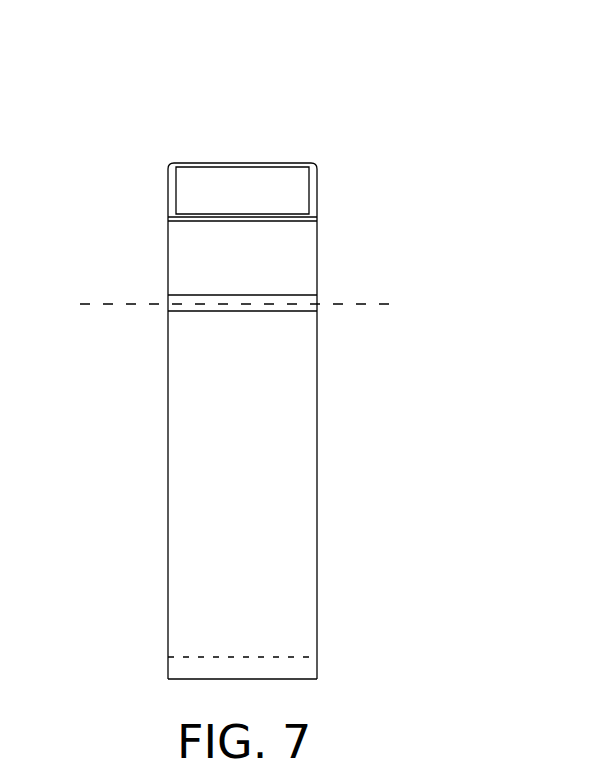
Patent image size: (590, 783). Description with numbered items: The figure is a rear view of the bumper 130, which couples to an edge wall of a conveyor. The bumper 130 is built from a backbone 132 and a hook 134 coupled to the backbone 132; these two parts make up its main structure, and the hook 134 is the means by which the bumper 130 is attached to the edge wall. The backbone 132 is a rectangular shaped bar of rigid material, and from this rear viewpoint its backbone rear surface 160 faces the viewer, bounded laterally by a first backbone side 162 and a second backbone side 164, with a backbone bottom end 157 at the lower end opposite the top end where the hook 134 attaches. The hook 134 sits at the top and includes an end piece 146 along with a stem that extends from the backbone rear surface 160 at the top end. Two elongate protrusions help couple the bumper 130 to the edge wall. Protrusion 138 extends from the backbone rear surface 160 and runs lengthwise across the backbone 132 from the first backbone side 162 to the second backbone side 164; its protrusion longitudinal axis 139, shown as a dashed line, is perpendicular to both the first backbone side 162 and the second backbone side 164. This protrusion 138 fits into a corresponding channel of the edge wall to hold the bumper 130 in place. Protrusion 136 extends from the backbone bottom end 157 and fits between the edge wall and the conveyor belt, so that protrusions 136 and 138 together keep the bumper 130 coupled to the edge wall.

The bumper 130 is at (235, 110).
The backbone 132 is at (298, 442).
The hook 134 is at (157, 197).
The protrusion 136 is at (295, 670).
The protrusion 138 is at (304, 302).
The protrusion longitudinal axis 139 is at (117, 305).
The end piece 146 is at (292, 195).
The backbone bottom end 157 is at (280, 657).
The backbone rear surface 160 is at (262, 373).
The first backbone side 162 is at (318, 386).
The second backbone side 164 is at (167, 466).